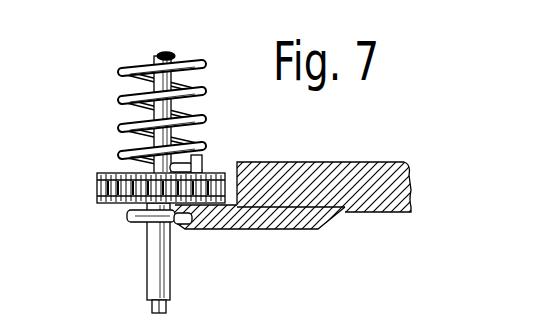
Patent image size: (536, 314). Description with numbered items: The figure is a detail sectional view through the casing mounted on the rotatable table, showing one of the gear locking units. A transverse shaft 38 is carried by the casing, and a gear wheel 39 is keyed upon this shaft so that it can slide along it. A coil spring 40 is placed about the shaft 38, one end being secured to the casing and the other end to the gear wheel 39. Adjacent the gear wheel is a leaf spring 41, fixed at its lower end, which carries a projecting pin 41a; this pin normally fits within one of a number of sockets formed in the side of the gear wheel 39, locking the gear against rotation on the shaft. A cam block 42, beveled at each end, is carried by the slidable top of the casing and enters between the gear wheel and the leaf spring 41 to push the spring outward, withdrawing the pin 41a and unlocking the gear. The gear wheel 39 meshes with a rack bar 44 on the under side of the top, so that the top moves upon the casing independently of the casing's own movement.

The transverse shaft 38 is at (118, 106).
The gear wheel 39 is at (97, 188).
The coil spring 40 is at (205, 110).
The leaf spring 41 is at (151, 220).
The projecting pin 41a is at (175, 220).
The cam block 42 is at (271, 229).
The rack bar 44 is at (352, 163).